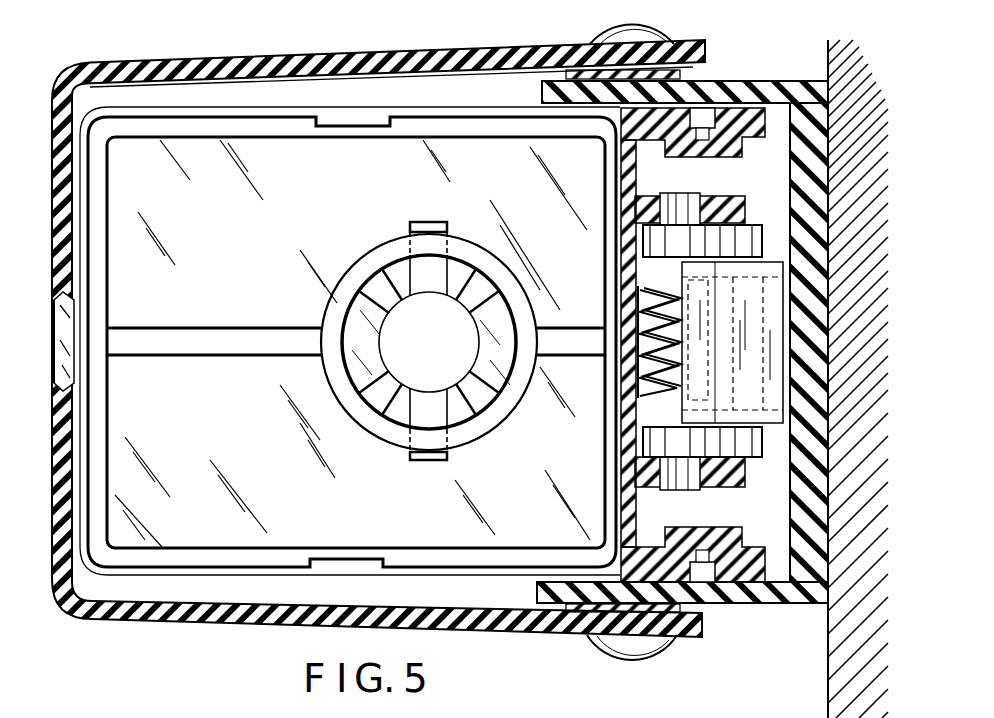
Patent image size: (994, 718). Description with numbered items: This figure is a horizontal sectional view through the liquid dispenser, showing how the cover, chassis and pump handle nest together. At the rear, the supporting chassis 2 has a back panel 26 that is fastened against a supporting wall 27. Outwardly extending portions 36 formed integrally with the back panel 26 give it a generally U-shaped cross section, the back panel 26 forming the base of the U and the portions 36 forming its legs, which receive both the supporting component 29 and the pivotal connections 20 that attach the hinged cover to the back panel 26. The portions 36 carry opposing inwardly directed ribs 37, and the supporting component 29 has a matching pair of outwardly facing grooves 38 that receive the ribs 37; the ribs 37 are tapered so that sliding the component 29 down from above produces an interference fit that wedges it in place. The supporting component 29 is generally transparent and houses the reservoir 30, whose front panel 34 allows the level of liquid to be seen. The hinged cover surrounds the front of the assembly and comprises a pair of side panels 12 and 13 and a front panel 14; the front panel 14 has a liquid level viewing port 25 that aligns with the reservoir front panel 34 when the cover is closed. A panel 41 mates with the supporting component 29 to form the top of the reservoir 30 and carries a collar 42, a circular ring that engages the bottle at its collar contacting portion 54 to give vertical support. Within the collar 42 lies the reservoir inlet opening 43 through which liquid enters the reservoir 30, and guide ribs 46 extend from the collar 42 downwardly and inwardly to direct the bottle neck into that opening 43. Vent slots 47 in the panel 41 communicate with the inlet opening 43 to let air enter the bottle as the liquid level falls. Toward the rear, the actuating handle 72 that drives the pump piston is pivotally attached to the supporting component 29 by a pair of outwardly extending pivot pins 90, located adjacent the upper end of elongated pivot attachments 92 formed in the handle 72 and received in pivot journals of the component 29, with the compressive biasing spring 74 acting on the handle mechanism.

The supporting chassis 2 is at (804, 76).
The side panel 12 is at (171, 620).
The side panel 13 is at (424, 56).
The front panel 14 is at (53, 247).
The pivotal connections 20 is at (657, 42).
The liquid level viewing port 25 is at (57, 362).
The back panel 26 is at (790, 175).
The supporting wall 27 is at (836, 684).
The supporting component 29 is at (611, 162).
The reservoir 30 is at (458, 115).
The reservoir front panel 34 is at (68, 337).
The outwardly extending portions 36 is at (767, 83).
The ribs 37 is at (697, 146).
The grooves 38 is at (708, 142).
The panel 41 is at (251, 227).
The collar 42 is at (343, 295).
The reservoir inlet opening 43 is at (481, 365).
The guide ribs 46 is at (482, 282).
The vent slots 47 is at (415, 283).
The collar contacting portion 54 is at (362, 409).
The actuating handle 72 is at (776, 231).
The compressive biasing spring 74 is at (650, 308).
The pivot pins 90 is at (740, 210).
The pivot attachments 92 is at (655, 242).